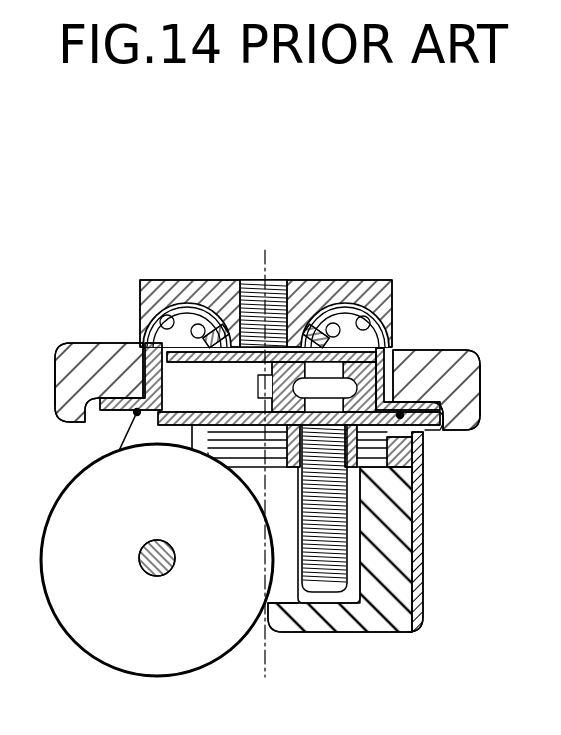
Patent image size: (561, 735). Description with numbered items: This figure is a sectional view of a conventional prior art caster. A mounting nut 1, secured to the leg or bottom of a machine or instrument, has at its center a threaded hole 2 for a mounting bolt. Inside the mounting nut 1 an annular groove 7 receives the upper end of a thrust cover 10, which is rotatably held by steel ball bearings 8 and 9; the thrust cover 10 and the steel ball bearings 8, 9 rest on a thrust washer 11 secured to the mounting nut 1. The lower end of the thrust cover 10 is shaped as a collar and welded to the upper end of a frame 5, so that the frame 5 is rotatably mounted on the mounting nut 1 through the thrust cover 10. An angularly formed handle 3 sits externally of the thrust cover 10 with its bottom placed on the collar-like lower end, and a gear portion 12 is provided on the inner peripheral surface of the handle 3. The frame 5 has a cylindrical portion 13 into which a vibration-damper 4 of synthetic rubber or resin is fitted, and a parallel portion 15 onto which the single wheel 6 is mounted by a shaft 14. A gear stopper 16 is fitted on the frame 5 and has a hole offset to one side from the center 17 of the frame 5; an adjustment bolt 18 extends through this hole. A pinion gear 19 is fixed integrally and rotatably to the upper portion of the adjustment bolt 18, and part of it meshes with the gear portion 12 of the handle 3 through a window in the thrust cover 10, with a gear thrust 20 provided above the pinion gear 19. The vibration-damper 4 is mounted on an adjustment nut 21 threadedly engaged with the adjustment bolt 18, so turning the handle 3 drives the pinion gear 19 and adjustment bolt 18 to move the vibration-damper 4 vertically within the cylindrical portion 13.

The mounting nut 1 is at (387, 298).
The threaded hole 2 is at (272, 290).
The handle 3 is at (472, 383).
The vibration-damper 4 is at (395, 617).
The frame 5 is at (425, 523).
The wheel 6 is at (73, 629).
The annular groove 7 is at (171, 283).
The steel ball bearing 8 is at (365, 300).
The steel ball bearing 9 is at (332, 300).
The thrust cover 10 is at (142, 345).
The thrust washer 11 is at (217, 283).
The gear portion 12 is at (147, 373).
The cylindrical portion 13 is at (413, 556).
The shaft 14 is at (156, 577).
The parallel portion 15 is at (130, 430).
The gear stopper 16 is at (422, 445).
The center 17 is at (270, 672).
The adjustment bolt 18 is at (331, 577).
The pinion gear 19 is at (258, 387).
The gear thrust 20 is at (150, 332).
The adjustment nut 21 is at (412, 475).